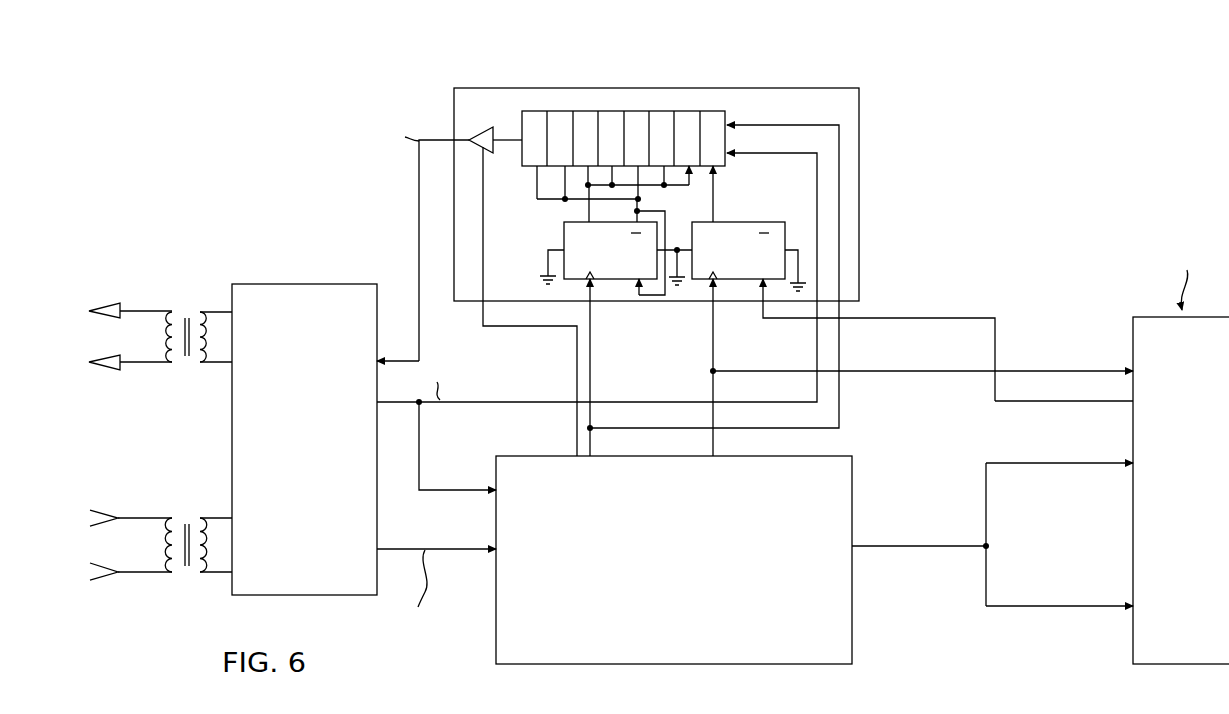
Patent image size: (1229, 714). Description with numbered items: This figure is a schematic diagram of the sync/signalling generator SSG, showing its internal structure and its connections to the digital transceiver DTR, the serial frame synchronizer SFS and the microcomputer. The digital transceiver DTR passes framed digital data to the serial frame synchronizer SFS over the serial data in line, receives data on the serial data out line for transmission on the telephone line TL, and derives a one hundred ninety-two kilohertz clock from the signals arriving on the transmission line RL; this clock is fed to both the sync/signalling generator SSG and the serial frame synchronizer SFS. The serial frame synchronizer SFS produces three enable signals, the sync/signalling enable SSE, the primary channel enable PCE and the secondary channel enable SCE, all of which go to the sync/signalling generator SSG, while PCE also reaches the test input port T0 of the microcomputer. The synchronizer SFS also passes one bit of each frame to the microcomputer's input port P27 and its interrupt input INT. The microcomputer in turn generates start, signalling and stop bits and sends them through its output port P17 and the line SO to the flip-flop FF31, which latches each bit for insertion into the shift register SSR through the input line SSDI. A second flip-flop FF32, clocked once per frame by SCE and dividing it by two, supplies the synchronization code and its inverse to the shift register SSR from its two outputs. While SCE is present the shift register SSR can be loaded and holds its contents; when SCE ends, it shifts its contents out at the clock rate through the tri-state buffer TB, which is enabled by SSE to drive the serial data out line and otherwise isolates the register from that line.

The sync/signalling generator SSG is at (858, 128).
The shift register SSR is at (727, 118).
The tri-state buffer TB is at (487, 124).
The second flip-flop FF32 is at (566, 226).
The flip-flop FF31 is at (734, 226).
The input line SSDI is at (721, 183).
The sync/signalling enable SSE is at (542, 326).
The secondary channel enable SCE is at (590, 358).
The primary channel enable PCE is at (714, 352).
The test input port T0 is at (923, 360).
The line S0 SO is at (945, 310).
The output port P17 is at (1064, 391).
The input port P27 is at (1059, 451).
The interrupt input INT is at (1121, 588).
The digital transceiver DTR is at (326, 492).
The serial frame synchronizer SFS is at (690, 636).
The telephone line TL is at (125, 337).
The transmission line RL is at (118, 546).